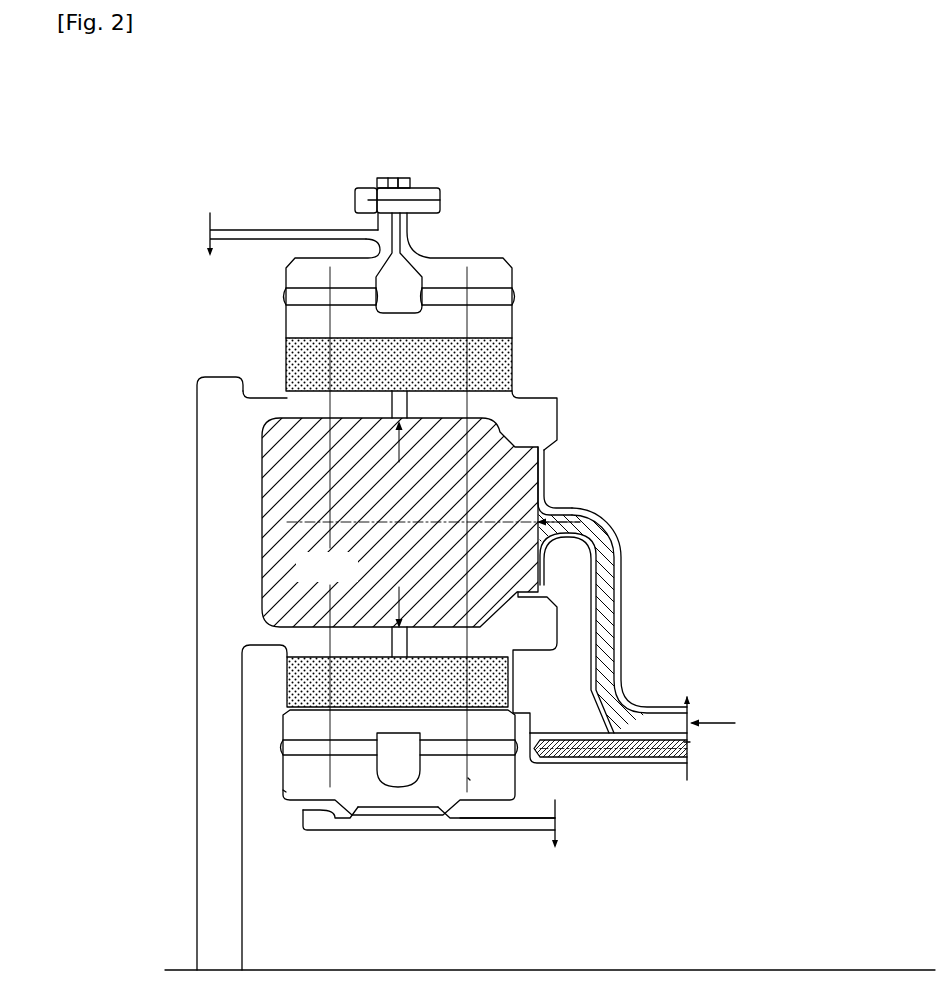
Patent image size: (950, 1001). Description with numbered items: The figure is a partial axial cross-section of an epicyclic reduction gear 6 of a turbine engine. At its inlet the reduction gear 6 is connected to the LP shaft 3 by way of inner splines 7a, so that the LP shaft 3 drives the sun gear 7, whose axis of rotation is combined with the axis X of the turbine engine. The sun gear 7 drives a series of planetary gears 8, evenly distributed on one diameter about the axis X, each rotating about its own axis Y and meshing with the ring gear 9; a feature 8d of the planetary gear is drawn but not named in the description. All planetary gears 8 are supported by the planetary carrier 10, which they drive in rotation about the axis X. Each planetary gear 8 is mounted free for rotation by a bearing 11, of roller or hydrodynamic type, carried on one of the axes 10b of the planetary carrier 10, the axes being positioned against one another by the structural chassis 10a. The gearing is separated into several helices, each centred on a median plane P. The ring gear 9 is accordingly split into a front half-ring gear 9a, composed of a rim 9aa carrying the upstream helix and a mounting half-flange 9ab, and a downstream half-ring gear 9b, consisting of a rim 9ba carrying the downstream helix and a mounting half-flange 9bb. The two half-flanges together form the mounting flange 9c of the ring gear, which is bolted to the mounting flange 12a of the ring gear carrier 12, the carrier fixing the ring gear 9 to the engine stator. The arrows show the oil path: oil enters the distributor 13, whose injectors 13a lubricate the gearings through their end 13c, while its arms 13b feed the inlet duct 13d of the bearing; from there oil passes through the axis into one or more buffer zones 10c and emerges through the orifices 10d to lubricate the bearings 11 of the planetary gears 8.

The LP shaft 3 is at (517, 822).
The epicyclic reduction gear 6 is at (640, 346).
The sun gear 7 is at (293, 773).
The inner splines 7a is at (380, 812).
The planetary gears 8 is at (293, 723).
The groove of lower elastic member 8d is at (292, 747).
The ring gear 9 is at (512, 260).
The front half-ring gear 9a is at (290, 277).
The rim 9aa is at (308, 270).
The mounting half-flange 9ab is at (393, 180).
The downstream half-ring gear 9b is at (503, 277).
The rim 9ba is at (455, 268).
The mounting half-flange 9bb is at (410, 180).
The mounting flange 9c is at (449, 93).
The planetary carrier 10 is at (556, 402).
The structural chassis 10a is at (222, 474).
The axes 10b is at (545, 628).
The buffer zones 10c is at (402, 523).
The orifices 10d is at (410, 403).
The bearing 11 is at (500, 353).
The ring gear carrier 12 is at (248, 230).
The mounting flange 12a is at (377, 178).
The distributor 13 is at (690, 670).
The injectors 13a is at (633, 758).
The arms 13b is at (617, 580).
The end 13c is at (533, 765).
The inlet duct 13d is at (551, 472).
The median plane P is at (284, 790).
The axis of rotation X is at (640, 963).
The axis Y is at (542, 498).